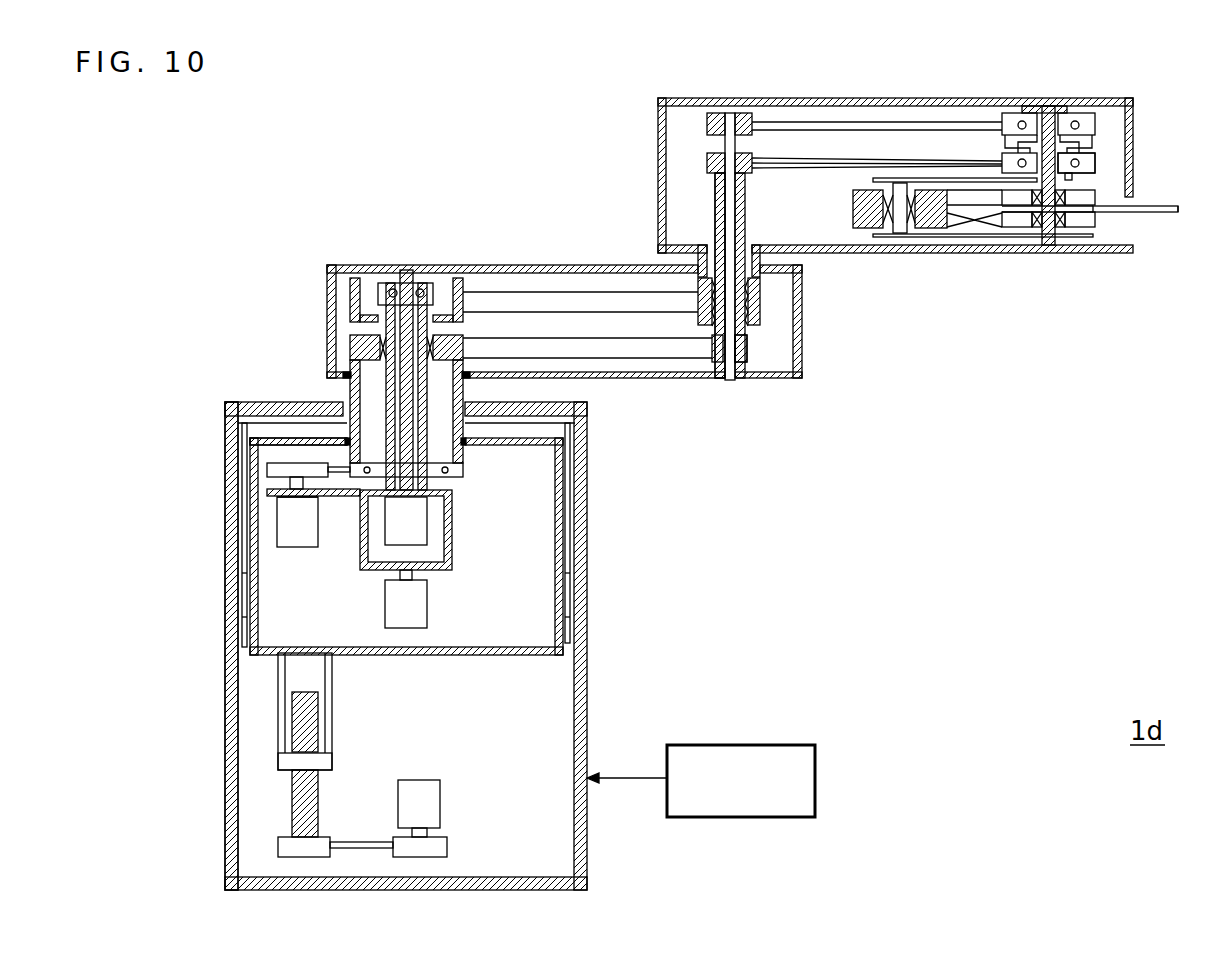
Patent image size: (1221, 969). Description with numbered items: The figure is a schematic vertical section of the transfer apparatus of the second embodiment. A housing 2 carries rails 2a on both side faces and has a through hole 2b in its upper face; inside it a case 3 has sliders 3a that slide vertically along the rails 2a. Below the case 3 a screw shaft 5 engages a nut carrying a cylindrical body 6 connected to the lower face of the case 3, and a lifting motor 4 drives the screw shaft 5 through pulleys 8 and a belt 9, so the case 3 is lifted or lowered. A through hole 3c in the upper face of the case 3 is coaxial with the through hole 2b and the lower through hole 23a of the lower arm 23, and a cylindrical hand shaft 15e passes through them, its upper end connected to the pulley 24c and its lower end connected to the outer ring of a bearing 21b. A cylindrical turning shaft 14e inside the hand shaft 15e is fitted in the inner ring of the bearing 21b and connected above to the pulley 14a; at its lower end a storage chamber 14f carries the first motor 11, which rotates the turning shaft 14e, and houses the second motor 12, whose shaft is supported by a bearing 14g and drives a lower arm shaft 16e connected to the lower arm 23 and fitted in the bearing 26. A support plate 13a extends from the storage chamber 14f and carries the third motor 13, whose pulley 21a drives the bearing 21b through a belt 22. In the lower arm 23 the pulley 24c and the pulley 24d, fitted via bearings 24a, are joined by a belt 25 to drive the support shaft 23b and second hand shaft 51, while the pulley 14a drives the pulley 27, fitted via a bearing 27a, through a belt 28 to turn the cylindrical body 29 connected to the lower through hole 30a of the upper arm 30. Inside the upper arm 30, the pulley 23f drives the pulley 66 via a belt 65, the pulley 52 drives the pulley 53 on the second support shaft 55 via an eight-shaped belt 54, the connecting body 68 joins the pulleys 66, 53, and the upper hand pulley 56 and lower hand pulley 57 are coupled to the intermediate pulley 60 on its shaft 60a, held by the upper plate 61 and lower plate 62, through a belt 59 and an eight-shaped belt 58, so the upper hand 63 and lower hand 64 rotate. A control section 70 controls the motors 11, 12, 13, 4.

The housing 2 is at (587, 728).
The rails 2a is at (240, 630).
The through hole 2b is at (578, 398).
The case 3 is at (558, 650).
The sliders 3a is at (247, 600).
The through hole 3c is at (272, 448).
The lifting motor 4 is at (435, 800).
The screw shaft 5 is at (318, 722).
The cylindrical body 6 is at (330, 688).
The pulleys 8 is at (290, 845).
The belt 9 is at (357, 840).
The first motor 11 is at (470, 632).
The second motor 12 is at (455, 560).
The third motor 13 is at (290, 548).
The support plate 13a is at (285, 497).
The pulley 14a is at (356, 283).
The turning shaft 14e is at (352, 390).
The storage chamber 14f is at (415, 600).
The bearing 14g is at (432, 515).
The hand shaft 15e is at (245, 428).
The lower arm shaft 16e is at (565, 444).
The pulley 21a is at (267, 470).
The bearing 21b is at (470, 472).
The belt 22 is at (267, 486).
The lower arm 23 is at (742, 385).
The lower through hole 23a is at (348, 375).
The support shaft 23b is at (723, 380).
The pulley 23f is at (722, 113).
The bearing 24a is at (350, 325).
The pulley 24c is at (352, 345).
The pulley 24d is at (748, 362).
The belt 25 is at (685, 350).
The bearing 26 is at (412, 283).
The pulley 27 is at (760, 300).
The bearing 27a is at (748, 345).
The belt 28 is at (512, 290).
The cylindrical body 29 is at (700, 262).
The upper arm 30 is at (880, 98).
The lower through hole 30a is at (660, 240).
The second hand shaft 51 is at (715, 215).
The pulley 52 is at (707, 162).
The pulley 53 is at (1095, 157).
The 8-shaped belt 54 is at (905, 178).
The second support shaft 55 is at (1040, 245).
The upper hand pulley 56 is at (1085, 228).
The lower hand pulley 57 is at (1050, 230).
The 8-shaped belt 58 is at (1010, 228).
The belt 59 is at (980, 195).
The intermediate pulley 60 is at (930, 230).
The shaft 60a is at (900, 232).
The upper plate 61 is at (868, 163).
The lower plate 62 is at (975, 228).
The upper hand 63 is at (1178, 205).
The lower hand 64 is at (1178, 214).
The belt 65 is at (776, 122).
The pulley 66 is at (1035, 128).
The connecting body 68 is at (1075, 140).
The control section 70 is at (748, 745).